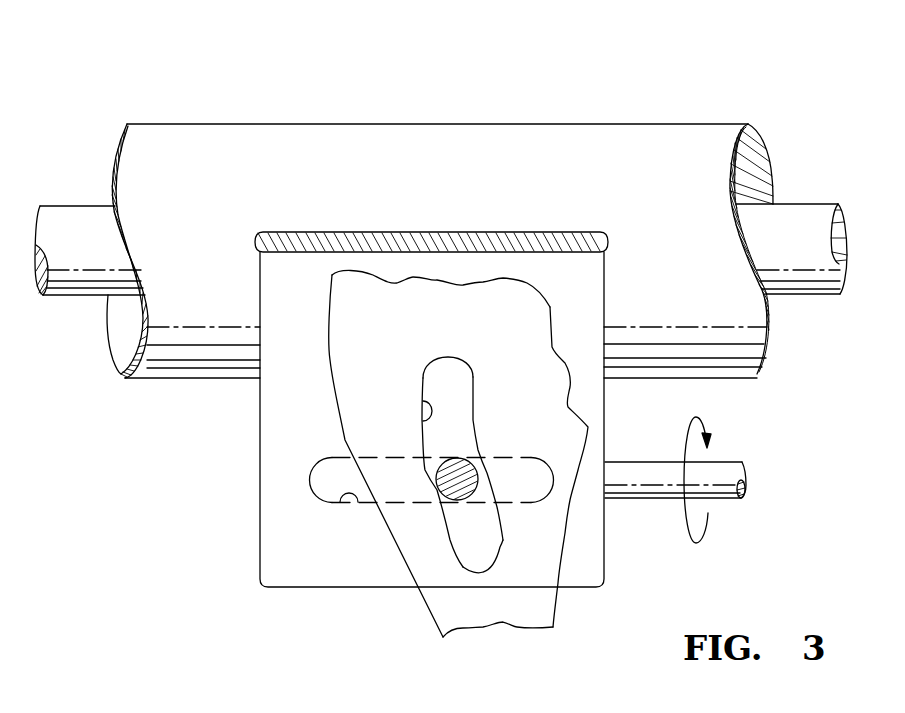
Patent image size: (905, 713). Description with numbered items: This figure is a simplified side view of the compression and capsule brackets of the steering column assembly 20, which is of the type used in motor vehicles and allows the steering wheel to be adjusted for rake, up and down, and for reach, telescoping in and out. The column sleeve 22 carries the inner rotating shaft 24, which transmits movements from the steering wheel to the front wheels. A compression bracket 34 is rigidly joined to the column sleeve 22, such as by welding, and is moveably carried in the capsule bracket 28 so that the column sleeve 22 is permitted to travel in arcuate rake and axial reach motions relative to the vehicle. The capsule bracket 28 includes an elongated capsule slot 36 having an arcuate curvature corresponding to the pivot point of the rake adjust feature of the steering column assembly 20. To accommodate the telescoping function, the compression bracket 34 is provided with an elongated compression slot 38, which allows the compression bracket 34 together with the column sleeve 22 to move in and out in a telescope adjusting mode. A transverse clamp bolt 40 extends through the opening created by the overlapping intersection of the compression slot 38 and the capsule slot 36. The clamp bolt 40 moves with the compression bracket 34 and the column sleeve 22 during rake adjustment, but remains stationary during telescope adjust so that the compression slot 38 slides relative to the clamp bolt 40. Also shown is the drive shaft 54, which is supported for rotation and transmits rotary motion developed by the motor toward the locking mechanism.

The steering column assembly 20 is at (197, 79).
The column sleeve 22 is at (498, 140).
The inner rotating shaft 24 is at (78, 215).
The capsule bracket 28 is at (425, 610).
The compression bracket 34 is at (259, 579).
The capsule slot 36 is at (422, 423).
The compression slot 38 is at (357, 502).
The clamp bolt 40 is at (515, 625).
The drive shaft 54 is at (643, 498).